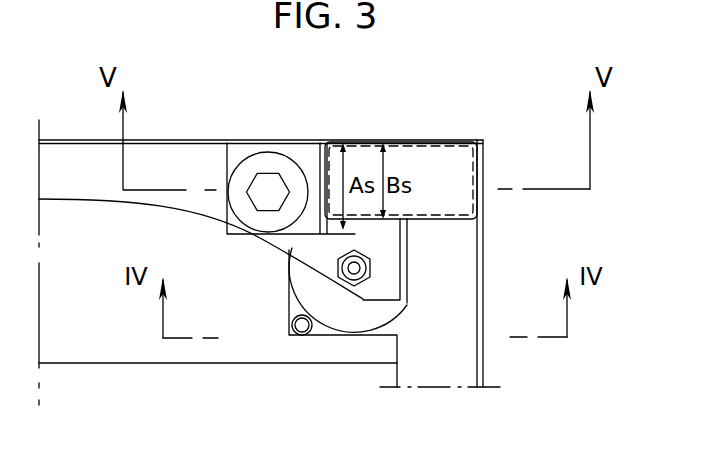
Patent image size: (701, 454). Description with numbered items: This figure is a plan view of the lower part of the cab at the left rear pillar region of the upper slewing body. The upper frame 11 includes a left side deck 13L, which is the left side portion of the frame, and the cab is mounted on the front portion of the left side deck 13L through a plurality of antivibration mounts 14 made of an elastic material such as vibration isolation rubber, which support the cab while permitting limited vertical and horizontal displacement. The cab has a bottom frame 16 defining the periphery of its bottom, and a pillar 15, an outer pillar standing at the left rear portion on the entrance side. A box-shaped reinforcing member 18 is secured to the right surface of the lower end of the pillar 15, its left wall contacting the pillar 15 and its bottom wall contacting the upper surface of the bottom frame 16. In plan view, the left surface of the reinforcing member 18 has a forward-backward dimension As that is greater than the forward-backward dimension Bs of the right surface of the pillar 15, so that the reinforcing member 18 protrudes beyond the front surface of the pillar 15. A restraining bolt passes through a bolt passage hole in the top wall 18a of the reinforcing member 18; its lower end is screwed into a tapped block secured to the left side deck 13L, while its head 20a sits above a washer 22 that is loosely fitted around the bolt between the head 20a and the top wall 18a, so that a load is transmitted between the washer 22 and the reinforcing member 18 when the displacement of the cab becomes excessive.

The upper frame 11 is at (192, 138).
The left side deck 13L is at (112, 352).
The antivibration mount 14 is at (345, 336).
The pillar 15 is at (440, 145).
The bottom frame 16 is at (72, 190).
The reinforcing member 18 is at (264, 145).
The top wall 18a is at (300, 147).
The head 20a is at (270, 205).
The washer 22 is at (244, 206).